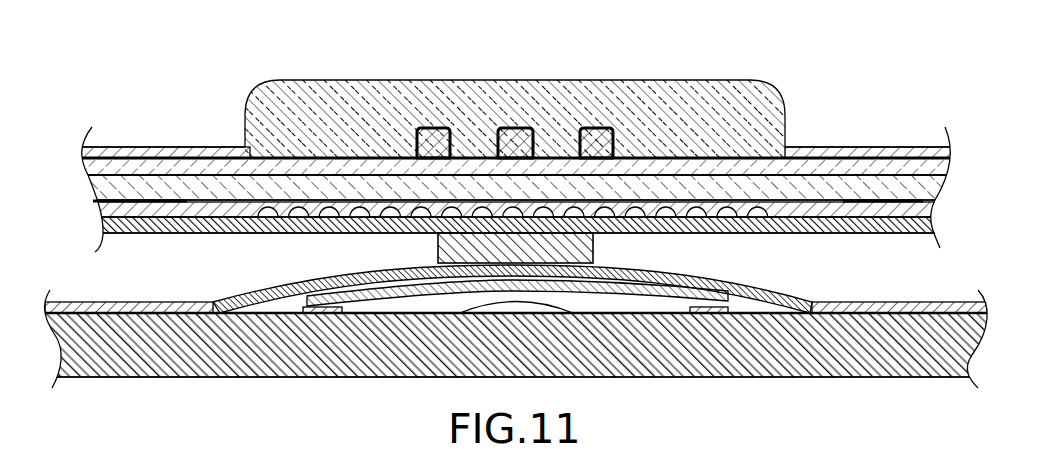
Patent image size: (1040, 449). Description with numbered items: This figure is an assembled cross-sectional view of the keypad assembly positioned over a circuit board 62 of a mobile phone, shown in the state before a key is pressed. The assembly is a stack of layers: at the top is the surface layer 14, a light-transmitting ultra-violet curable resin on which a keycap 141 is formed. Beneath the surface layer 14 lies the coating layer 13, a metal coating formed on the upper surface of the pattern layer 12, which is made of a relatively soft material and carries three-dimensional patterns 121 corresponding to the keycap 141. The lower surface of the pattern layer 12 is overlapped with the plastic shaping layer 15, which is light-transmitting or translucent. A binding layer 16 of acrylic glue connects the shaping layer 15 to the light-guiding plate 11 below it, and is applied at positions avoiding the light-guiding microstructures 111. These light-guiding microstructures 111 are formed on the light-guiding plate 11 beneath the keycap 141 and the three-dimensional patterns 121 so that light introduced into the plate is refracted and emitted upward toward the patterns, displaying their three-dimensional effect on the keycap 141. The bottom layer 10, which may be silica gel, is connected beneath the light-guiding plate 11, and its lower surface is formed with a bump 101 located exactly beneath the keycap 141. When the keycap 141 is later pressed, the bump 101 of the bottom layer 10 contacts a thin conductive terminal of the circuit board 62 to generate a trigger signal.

The bottom layer 10 is at (308, 230).
The light-guiding plate 11 is at (809, 208).
The pattern layer 12 is at (840, 163).
The coating layer 13 is at (200, 157).
The surface layer 14 is at (130, 148).
The shaping layer 15 is at (222, 190).
The binding layer 16 is at (903, 186).
The circuit board 62 is at (870, 365).
The bump 101 is at (450, 247).
The light-guiding microstructure 111 is at (646, 235).
The three-dimensional pattern 121 is at (430, 143).
The keycap 141 is at (673, 97).